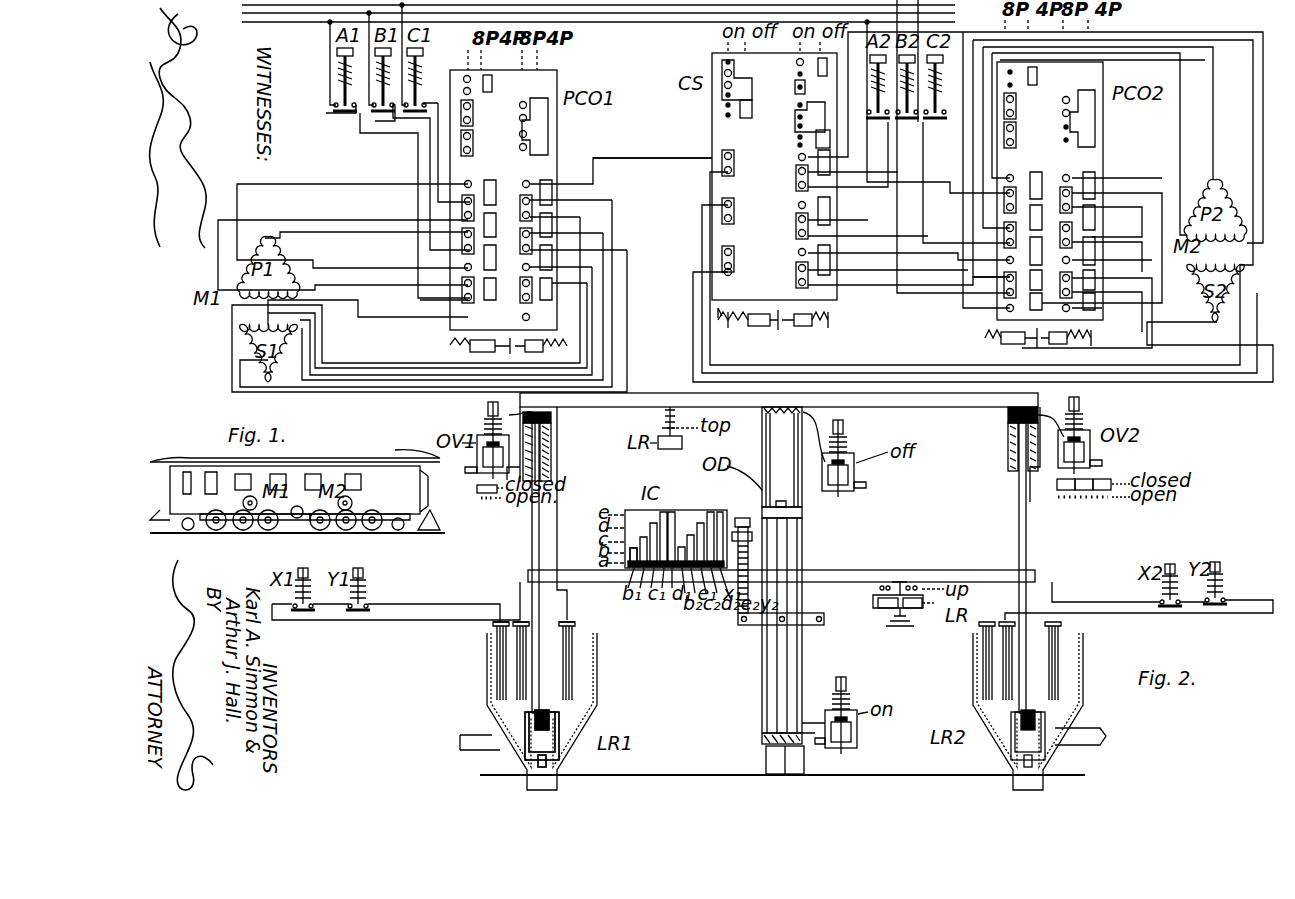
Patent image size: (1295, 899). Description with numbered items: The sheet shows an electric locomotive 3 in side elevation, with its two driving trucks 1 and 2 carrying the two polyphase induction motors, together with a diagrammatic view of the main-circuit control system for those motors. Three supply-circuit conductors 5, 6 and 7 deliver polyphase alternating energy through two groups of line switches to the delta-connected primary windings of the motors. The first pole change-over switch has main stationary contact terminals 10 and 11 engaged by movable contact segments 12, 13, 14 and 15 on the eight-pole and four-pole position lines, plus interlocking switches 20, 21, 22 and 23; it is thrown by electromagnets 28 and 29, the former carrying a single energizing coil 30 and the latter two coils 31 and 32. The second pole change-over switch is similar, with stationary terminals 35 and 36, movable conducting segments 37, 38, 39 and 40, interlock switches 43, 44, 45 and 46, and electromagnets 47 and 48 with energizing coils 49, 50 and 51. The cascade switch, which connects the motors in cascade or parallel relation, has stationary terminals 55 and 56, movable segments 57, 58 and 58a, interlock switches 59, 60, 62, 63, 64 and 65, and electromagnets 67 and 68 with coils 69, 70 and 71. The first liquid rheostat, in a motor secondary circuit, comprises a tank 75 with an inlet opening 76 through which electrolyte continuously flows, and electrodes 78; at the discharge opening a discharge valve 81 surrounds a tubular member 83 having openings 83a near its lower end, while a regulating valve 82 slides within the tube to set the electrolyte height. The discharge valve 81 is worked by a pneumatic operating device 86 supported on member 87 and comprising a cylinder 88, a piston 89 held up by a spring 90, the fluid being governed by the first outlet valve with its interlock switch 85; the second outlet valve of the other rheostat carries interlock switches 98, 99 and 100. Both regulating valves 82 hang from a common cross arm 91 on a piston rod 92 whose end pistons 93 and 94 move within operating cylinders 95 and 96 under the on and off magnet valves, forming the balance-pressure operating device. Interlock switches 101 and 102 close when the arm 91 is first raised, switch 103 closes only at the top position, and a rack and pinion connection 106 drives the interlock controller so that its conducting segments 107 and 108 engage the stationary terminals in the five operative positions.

In FIG. 1, the driving truck 1 is at (255, 530).
In FIG. 1, the driving truck 2 is at (360, 530).
In FIG. 1, the electric locomotive 3 is at (300, 520).
In FIG. 2, the supply-circuit conductor 5 is at (630, 8).
In FIG. 2, the supply-circuit conductor 6 is at (640, 15).
In FIG. 2, the supply-circuit conductor 7 is at (655, 24).
In FIG. 2, the main stationary contact terminals 10 is at (468, 180).
In FIG. 2, the main stationary contact terminals 11 is at (526, 180).
In FIG. 2, the movable contact segments 12 is at (461, 210).
In FIG. 2, the movable contact segments 13 is at (493, 227).
In FIG. 2, the movable contact segments 14 is at (520, 210).
In FIG. 2, the movable contact segments 15 is at (555, 185).
In FIG. 2, the interlocking switch 20 is at (492, 84).
In FIG. 2, the interlocking switch 21 is at (473, 110).
In FIG. 2, the interlocking switch 22 is at (473, 143).
In FIG. 2, the interlocking switch 23 is at (520, 128).
In FIG. 2, the electromagnet 28 is at (455, 340).
In FIG. 2, the electromagnet 29 is at (526, 321).
In FIG. 2, the energizing coil 30 is at (470, 348).
In FIG. 2, the energizing coil 31 is at (548, 334).
In FIG. 2, the energizing coil 32 is at (557, 350).
In FIG. 2, the main stationary contact terminals 35 is at (1016, 168).
In FIG. 2, the main stationary contact terminals 36 is at (1066, 175).
In FIG. 2, the movable conducting segments 37 is at (1028, 180).
In FIG. 2, the movable conducting segments 38 is at (1035, 197).
In FIG. 2, the movable conducting segments 39 is at (1035, 224).
In FIG. 2, the movable conducting segments 40 is at (1085, 172).
In FIG. 2, the interlock switch 43 is at (1037, 76).
In FIG. 2, the interlock switch 44 is at (1016, 104).
In FIG. 2, the interlock switch 45 is at (1016, 134).
In FIG. 2, the interlock switch 46 is at (1079, 106).
In FIG. 2, the operating electromagnet 47 is at (1020, 344).
In FIG. 2, the operating electromagnet 48 is at (1062, 329).
In FIG. 2, the energizing coil 49 is at (980, 343).
In FIG. 2, the energizing coil 50 is at (1074, 349).
In FIG. 2, the energizing coil 51 is at (1092, 346).
In FIG. 2, the main stationary contact terminals 55 is at (730, 285).
In FIG. 2, the main stationary contact terminals 56 is at (796, 285).
In FIG. 2, the movable segments 57 is at (735, 255).
In FIG. 2, the movable segments 58 is at (796, 228).
In FIG. 2, the movable segments 58a is at (830, 203).
In FIG. 2, the interlock switch 59 is at (752, 82).
In FIG. 2, the interlock switch 60 is at (752, 108).
In FIG. 2, the interlock switch 62 is at (797, 62).
In FIG. 2, the interlock switch 63 is at (805, 87).
In FIG. 2, the interlock switch 64 is at (793, 120).
In FIG. 2, the interlock switch 65 is at (830, 140).
In FIG. 2, the electromagnet 67 is at (732, 328).
In FIG. 2, the electromagnet 68 is at (803, 326).
In FIG. 2, the energizing coil 69 is at (717, 332).
In FIG. 2, the energizing coil 70 is at (758, 326).
In FIG. 2, the energizing coil 71 is at (824, 326).
In FIG. 2, the tank 75 is at (597, 697).
In FIG. 2, the inlet opening 76 is at (468, 735).
In FIG. 2, the electrodes 78 is at (510, 650).
In FIG. 2, the discharge valve 81 is at (555, 738).
In FIG. 2, the regulating valve 82 is at (550, 710).
In FIG. 2, the tubular member 83 is at (525, 730).
In FIG. 2, the openings 83a is at (537, 764).
In FIG. 2, the interlock switch 85 is at (475, 489).
In FIG. 2, the pneumatic operating device 86 is at (545, 461).
In FIG. 2, the supporting member 87 is at (668, 392).
In FIG. 2, the cylinder 88 is at (551, 470).
In FIG. 2, the piston 89 is at (551, 418).
In FIG. 2, the spring 90 is at (551, 445).
In FIG. 2, the supporting member or arm 91 is at (600, 582).
In FIG. 2, the piston rod 92 is at (787, 552).
In FIG. 2, the end piston 93 is at (782, 457).
In FIG. 2, the end piston 94 is at (762, 722).
In FIG. 2, the operating cylinder 95 is at (802, 512).
In FIG. 2, the operating cylinder 96 is at (762, 670).
In FIG. 2, the interlock switch 98 is at (1062, 490).
In FIG. 2, the interlock switch 99 is at (1084, 490).
In FIG. 2, the interlock switch 100 is at (1102, 490).
In FIG. 2, the interlock switch 101 is at (884, 608).
In FIG. 2, the interlock switch 102 is at (915, 608).
In FIG. 2, the auxiliary interlock switch 103 is at (665, 450).
In FIG. 2, the rack and pinion connection 106 is at (745, 518).
In FIG. 2, the conducting segment 107 is at (648, 536).
In FIG. 2, the conducting segment 108 is at (710, 510).